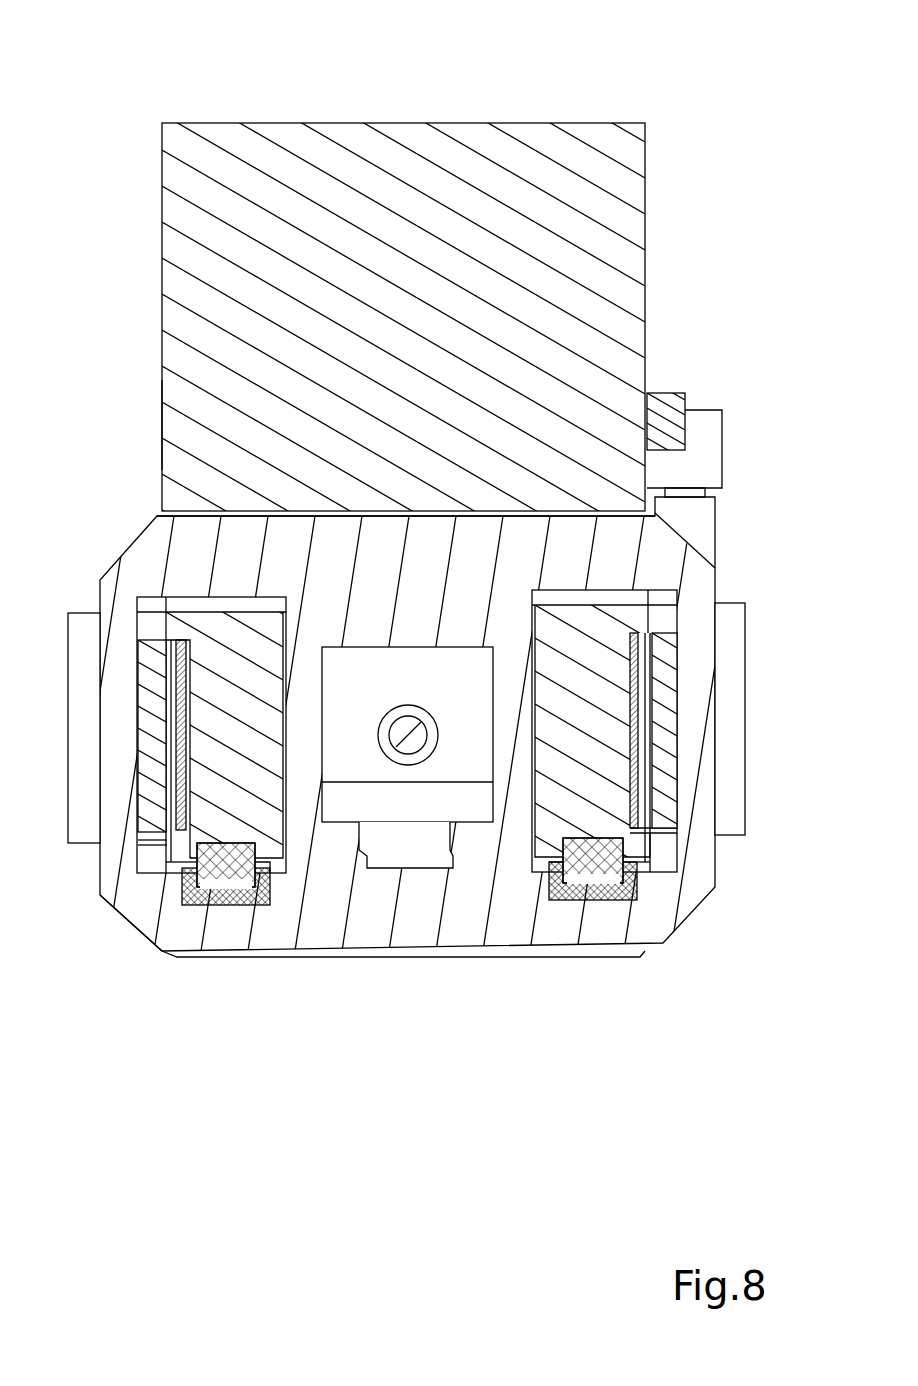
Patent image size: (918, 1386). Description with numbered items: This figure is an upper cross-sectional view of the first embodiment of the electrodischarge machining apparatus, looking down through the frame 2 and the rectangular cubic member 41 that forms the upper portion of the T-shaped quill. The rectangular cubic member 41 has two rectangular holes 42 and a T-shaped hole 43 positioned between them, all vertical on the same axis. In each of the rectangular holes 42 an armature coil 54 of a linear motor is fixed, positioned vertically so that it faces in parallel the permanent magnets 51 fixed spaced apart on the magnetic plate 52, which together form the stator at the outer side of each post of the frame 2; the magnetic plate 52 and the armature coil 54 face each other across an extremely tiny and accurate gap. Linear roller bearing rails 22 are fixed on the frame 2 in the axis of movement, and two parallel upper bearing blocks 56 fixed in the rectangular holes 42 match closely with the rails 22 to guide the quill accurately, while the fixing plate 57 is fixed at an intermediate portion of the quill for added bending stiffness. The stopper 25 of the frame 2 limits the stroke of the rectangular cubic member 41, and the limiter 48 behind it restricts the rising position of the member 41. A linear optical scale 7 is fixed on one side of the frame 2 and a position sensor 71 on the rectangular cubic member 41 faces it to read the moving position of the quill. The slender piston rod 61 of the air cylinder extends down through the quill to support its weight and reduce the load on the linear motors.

The frame 2 is at (527, 188).
The linear optical scale 7 is at (144, 425).
The position sensor 71 is at (144, 505).
The limiter 48 is at (695, 442).
The stopper 25 is at (730, 712).
The rectangular cubic member 41 is at (375, 764).
The rectangular holes 42 is at (97, 935).
The linear roller bearing rails 22 is at (389, 950).
The upper bearing blocks 56 is at (399, 961).
The T-shaped hole 43 is at (384, 857).
The piston rod 61 is at (422, 758).
The fixing plate 57 is at (403, 1029).
The armature coil 54 is at (668, 815).
The permanent magnets 51 is at (648, 800).
The magnetic plate 52 is at (633, 805).